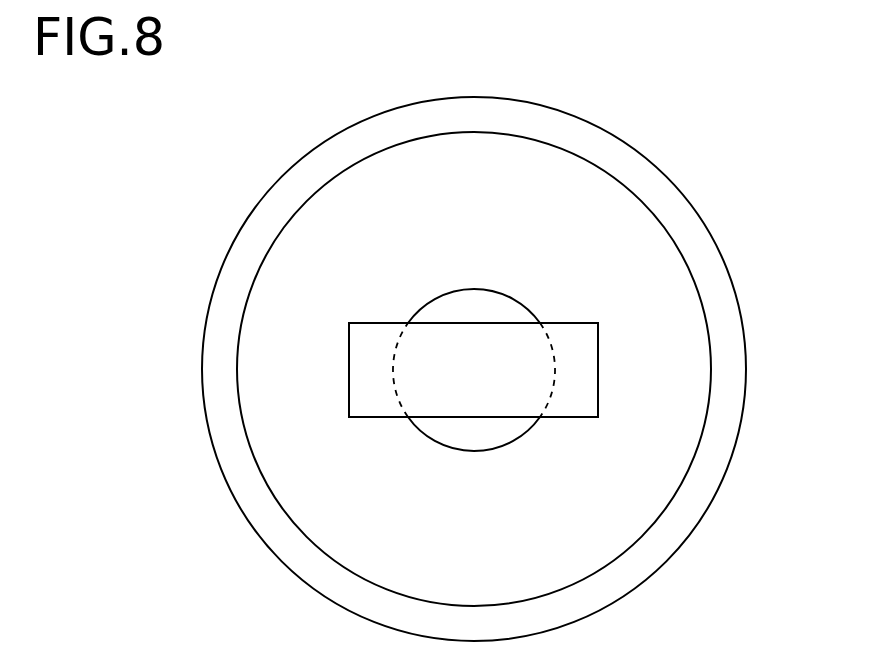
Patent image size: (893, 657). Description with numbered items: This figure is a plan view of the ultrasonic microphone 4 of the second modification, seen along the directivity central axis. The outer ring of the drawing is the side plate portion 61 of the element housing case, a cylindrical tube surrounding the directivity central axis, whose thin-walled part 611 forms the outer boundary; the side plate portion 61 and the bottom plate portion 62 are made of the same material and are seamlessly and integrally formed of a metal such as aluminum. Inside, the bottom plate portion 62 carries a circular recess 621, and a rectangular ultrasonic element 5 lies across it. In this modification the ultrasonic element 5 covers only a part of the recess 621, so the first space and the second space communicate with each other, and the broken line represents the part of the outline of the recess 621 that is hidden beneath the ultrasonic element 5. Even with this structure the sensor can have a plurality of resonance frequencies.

The ultrasonic microphone 4 is at (504, 331).
The side plate portion 61 is at (504, 369).
The thin-walled part 611 is at (622, 163).
The bottom plate portion 62 is at (653, 277).
The recess 621 is at (512, 297).
The ultrasonic element 5 is at (598, 358).